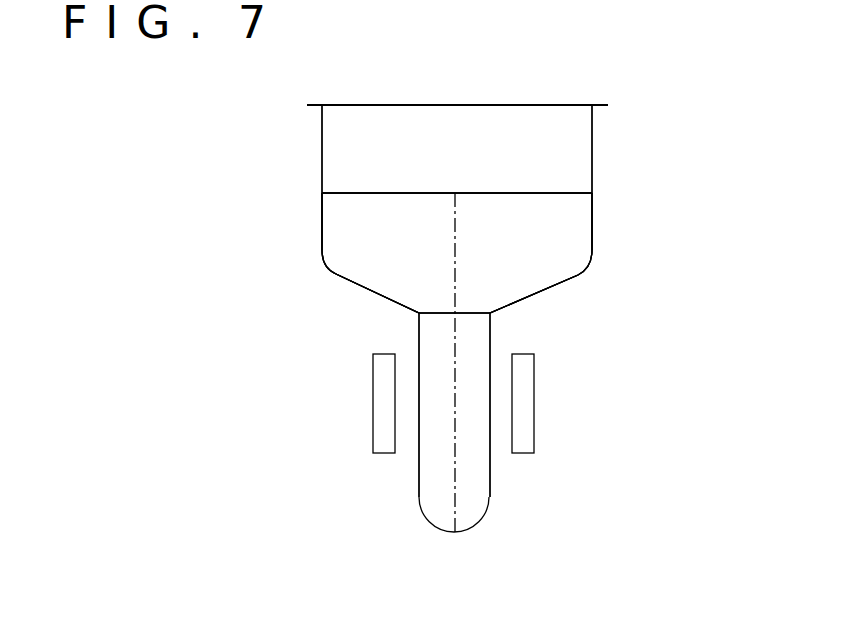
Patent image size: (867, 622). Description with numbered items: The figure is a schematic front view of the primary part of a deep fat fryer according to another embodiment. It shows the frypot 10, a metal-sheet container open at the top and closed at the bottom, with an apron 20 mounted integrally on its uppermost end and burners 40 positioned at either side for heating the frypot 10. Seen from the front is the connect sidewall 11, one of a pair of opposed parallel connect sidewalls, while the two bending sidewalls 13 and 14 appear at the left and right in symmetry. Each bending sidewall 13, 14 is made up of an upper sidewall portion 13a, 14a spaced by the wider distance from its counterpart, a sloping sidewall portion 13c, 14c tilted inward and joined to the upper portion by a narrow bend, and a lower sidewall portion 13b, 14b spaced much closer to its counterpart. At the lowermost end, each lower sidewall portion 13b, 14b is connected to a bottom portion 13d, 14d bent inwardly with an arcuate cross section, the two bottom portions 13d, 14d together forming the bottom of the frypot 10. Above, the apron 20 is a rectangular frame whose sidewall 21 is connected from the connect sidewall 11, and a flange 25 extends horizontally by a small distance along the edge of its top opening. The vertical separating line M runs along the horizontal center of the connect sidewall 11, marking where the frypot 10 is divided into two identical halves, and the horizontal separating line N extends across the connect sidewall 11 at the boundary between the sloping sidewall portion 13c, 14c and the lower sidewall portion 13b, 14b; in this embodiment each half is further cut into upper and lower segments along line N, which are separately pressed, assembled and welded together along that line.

The frypot 10 is at (596, 205).
The connect sidewall 11 is at (573, 228).
The bending sidewall 13 is at (320, 265).
The upper sidewall portion 13a is at (321, 208).
The lower sidewall portion 13b is at (419, 458).
The sloping sidewall portion 13c is at (358, 285).
The bottom portion 13d is at (432, 524).
The bending sidewall 14 is at (585, 277).
The upper sidewall portion 14a is at (594, 243).
The lower sidewall portion 14b is at (490, 465).
The sloping sidewall portion 14c is at (537, 295).
The bottom portion 14d is at (478, 524).
The apron 20 is at (596, 177).
The sidewall 21 is at (568, 143).
The flange 25 is at (321, 104).
The burner 40 is at (373, 376).
The horizontal separating line N is at (428, 314).
The vertical separating line M is at (456, 470).